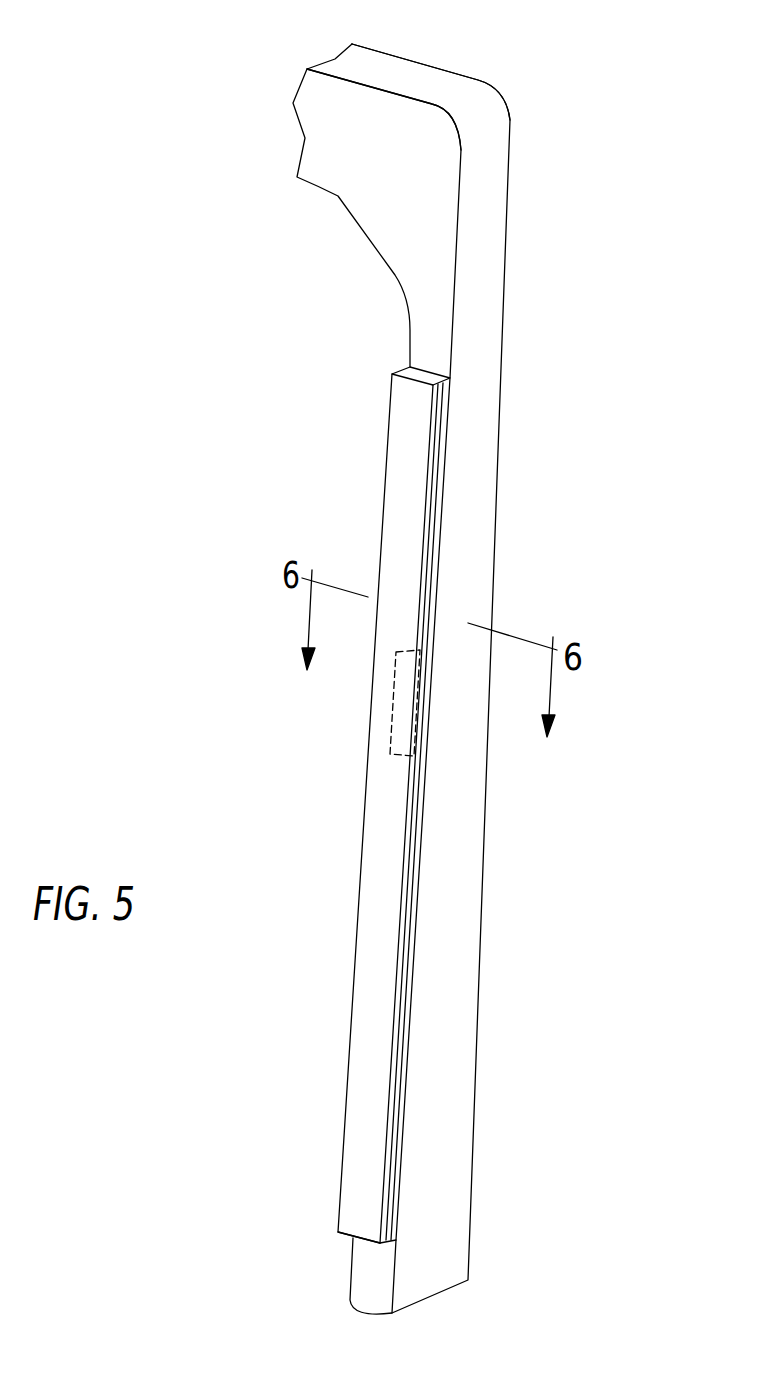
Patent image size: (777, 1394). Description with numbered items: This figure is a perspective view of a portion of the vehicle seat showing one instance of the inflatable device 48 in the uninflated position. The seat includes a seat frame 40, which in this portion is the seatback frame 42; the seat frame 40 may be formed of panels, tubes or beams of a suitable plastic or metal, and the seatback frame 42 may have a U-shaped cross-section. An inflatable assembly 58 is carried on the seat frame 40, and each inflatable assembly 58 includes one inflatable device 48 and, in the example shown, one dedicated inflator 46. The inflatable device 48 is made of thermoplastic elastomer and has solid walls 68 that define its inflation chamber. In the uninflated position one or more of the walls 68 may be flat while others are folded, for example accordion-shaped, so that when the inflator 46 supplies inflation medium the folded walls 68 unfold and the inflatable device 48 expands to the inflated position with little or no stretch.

The seat frame 40 is at (493, 200).
The seatback frame 42 is at (413, 75).
The inflator 46 is at (390, 718).
The inflatable device 48 is at (392, 523).
The inflatable assembly 58 is at (336, 1249).
The walls 68 is at (387, 433).